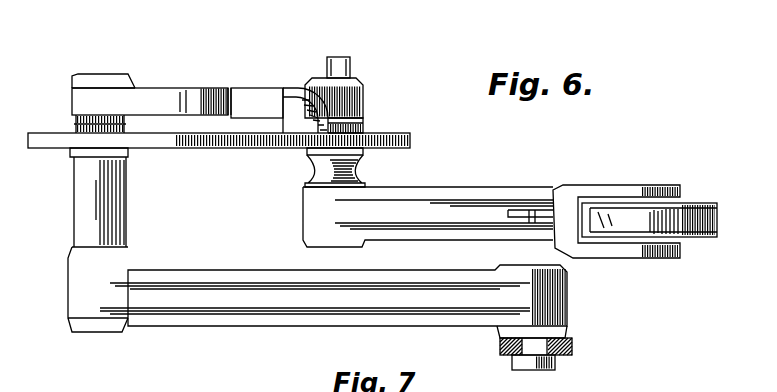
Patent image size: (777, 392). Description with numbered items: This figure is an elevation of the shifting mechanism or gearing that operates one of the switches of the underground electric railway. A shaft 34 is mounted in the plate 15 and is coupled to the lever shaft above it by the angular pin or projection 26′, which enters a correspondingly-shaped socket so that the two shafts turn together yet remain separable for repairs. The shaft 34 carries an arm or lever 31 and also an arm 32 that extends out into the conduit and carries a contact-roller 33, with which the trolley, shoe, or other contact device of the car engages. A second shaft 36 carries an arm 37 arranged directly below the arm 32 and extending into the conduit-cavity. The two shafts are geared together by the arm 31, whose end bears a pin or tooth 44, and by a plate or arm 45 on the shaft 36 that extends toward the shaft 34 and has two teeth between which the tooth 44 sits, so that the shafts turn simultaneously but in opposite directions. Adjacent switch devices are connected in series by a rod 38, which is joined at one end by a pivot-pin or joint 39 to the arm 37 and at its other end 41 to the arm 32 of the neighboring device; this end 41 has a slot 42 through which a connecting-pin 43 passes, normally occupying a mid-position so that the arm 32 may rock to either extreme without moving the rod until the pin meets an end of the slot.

The plate 15 is at (213, 151).
The angular pin or projection 26′ is at (341, 63).
The arm or lever 31 is at (257, 103).
The arm 32 is at (452, 210).
The contact-roller 33 is at (718, 225).
The shaft 34 is at (348, 167).
The shaft 36 is at (128, 209).
The arm 37 is at (317, 292).
The rod 38 is at (500, 347).
The pivot-pin or joint 39 is at (536, 371).
The end of the rod 41 is at (510, 220).
The slot 42 is at (532, 217).
The connecting-pin 43 is at (537, 198).
The pin or tooth 44 is at (229, 86).
The plate or arm 45 is at (150, 103).